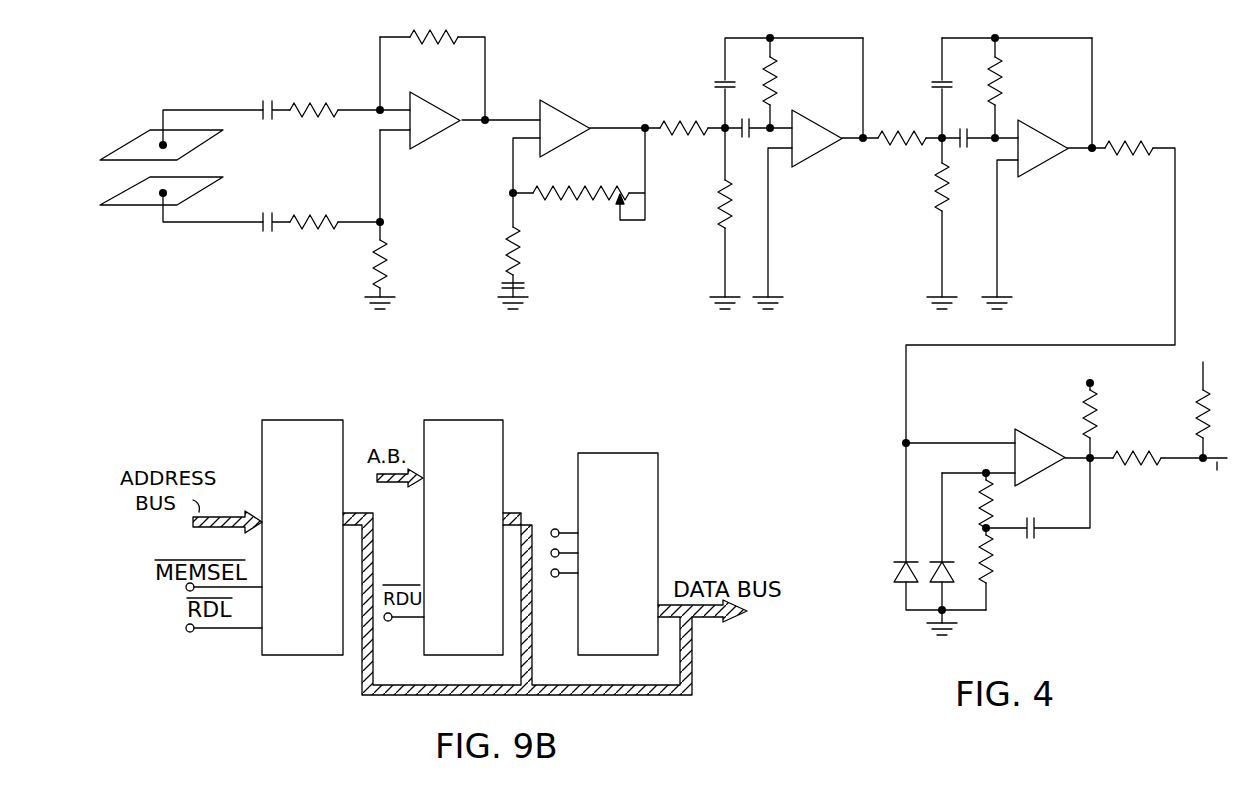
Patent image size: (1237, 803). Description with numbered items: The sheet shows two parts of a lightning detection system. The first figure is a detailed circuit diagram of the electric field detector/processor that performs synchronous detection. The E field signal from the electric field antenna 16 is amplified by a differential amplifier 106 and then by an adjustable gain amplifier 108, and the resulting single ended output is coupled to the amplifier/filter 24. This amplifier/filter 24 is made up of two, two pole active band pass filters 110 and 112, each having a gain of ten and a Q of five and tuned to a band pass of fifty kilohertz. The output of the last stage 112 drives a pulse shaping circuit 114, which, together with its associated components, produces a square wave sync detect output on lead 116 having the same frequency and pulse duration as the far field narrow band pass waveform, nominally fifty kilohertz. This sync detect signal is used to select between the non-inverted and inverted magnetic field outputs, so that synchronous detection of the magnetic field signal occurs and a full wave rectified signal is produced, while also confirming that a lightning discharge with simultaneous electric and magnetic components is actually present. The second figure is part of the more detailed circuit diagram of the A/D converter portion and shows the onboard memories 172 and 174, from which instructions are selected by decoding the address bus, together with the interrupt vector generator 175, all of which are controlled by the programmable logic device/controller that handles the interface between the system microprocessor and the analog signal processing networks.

In FIG. 4, the electric field antenna 16 is at (208, 163).
In FIG. 4, the differential amplifier 106 is at (458, 78).
In FIG. 4, the adjustable gain amplifier 108 is at (593, 118).
In FIG. 4, the active band pass filter 110 is at (803, 105).
In FIG. 4, the active band pass filter 112 is at (1025, 112).
In FIG. 4, the amplifier/filter 24 is at (878, 267).
In FIG. 4, the pulse shaping circuit 114 is at (1008, 410).
In FIG. 4, the lead 116 is at (1170, 431).
In FIG. 9B, the onboard memory 172 is at (345, 442).
In FIG. 9B, the onboard memory 174 is at (503, 448).
In FIG. 9B, the interrupt vector generator 175 is at (618, 453).